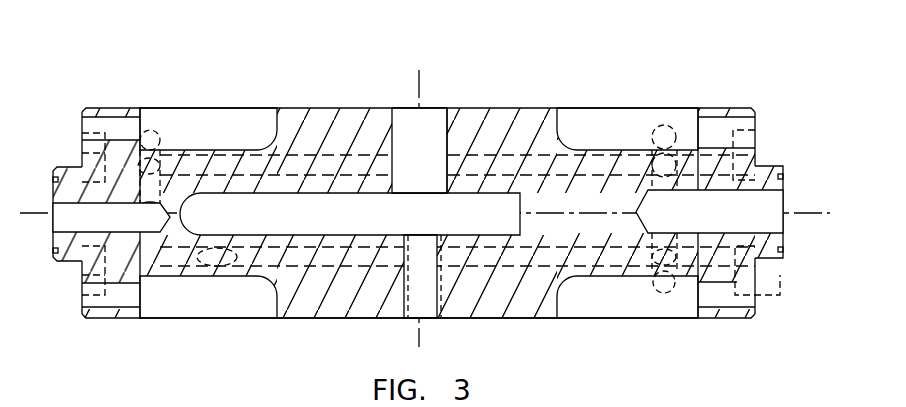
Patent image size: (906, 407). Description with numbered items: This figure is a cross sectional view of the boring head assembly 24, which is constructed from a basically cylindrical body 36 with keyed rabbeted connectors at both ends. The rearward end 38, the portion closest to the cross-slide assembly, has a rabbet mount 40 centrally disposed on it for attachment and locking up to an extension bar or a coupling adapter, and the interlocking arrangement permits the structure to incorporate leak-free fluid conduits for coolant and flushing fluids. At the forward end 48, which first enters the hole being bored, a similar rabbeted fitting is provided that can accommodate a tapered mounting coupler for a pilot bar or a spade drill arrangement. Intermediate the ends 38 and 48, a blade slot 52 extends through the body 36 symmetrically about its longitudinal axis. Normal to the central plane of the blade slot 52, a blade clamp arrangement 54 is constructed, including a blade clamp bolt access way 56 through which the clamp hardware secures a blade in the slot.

The boring head assembly 24 is at (530, 127).
The cylindrical body 36 is at (348, 300).
The rearward end 38 is at (757, 143).
The rabbet mount 40 is at (765, 163).
The forward end 48 is at (82, 143).
The blade slot 52 is at (312, 207).
The blade clamp arrangement 54 is at (433, 122).
The blade clamp bolt access way 56 is at (410, 122).